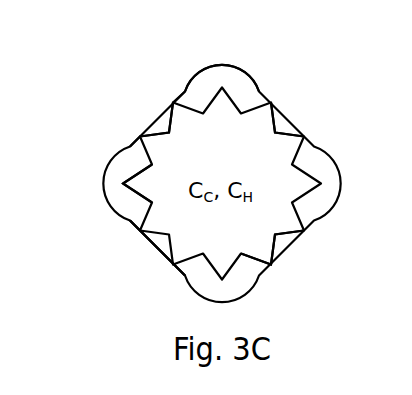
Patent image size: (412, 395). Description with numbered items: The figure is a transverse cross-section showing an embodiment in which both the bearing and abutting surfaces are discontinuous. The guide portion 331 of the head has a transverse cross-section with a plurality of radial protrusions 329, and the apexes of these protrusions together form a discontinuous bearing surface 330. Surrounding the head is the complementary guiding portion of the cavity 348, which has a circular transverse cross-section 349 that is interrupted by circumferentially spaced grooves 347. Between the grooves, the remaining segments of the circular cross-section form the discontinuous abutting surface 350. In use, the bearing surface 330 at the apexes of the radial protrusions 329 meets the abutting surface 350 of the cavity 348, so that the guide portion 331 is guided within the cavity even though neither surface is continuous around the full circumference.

The radial protrusions 329 is at (283, 225).
The discontinuous bearing surface 330 is at (173, 103).
The guide portion 331 is at (275, 122).
The circumferentially spaced grooves 347 is at (217, 83).
The cavity 348 is at (122, 197).
The circular transverse cross-section 349 is at (152, 253).
The discontinuous abutting surface 350 is at (152, 253).